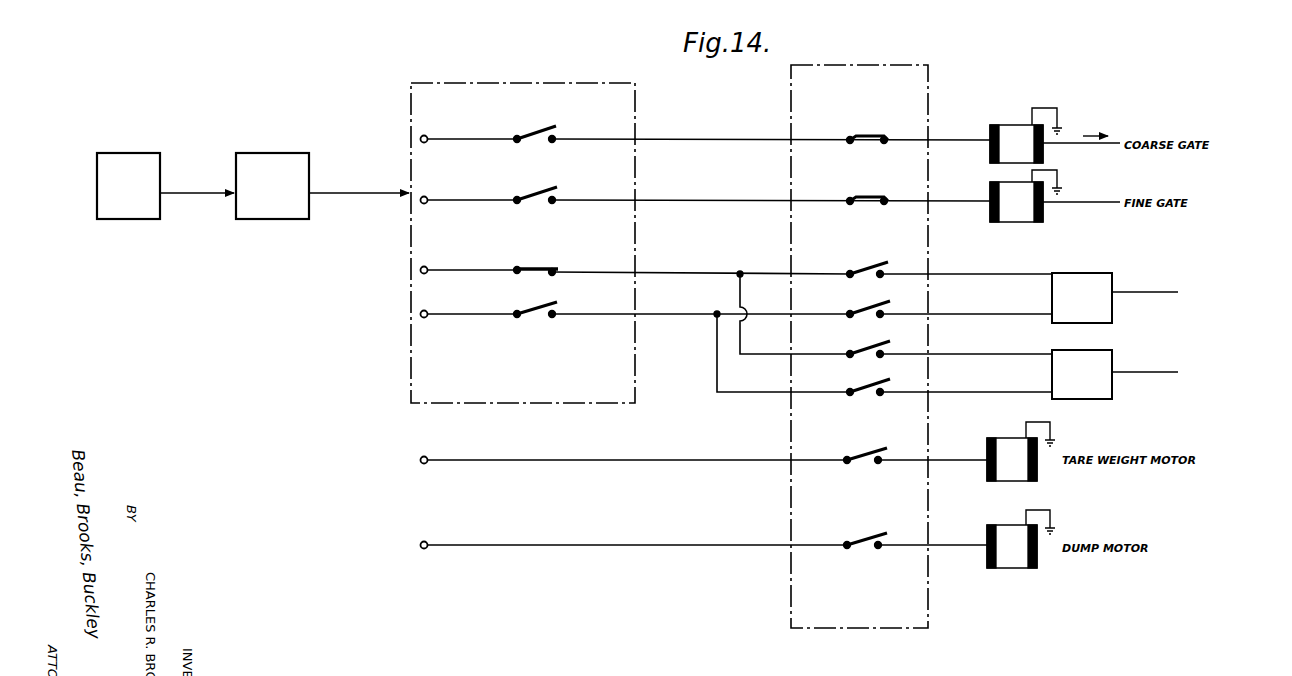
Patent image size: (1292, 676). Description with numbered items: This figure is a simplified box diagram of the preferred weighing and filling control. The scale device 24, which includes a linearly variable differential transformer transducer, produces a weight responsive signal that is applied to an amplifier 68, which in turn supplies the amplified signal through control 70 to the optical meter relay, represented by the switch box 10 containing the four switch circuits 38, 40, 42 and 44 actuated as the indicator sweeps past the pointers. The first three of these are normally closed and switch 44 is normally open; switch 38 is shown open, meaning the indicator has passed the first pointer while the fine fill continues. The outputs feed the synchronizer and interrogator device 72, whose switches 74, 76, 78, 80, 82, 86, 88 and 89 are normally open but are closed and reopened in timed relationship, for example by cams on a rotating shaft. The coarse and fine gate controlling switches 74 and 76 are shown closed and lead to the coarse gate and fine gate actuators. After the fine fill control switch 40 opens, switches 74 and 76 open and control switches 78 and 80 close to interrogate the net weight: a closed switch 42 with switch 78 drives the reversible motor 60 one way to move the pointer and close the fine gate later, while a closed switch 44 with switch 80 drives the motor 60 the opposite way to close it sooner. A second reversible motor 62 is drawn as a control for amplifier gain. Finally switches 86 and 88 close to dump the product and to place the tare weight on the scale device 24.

The switch box 10 is at (548, 82).
The scale device 24 is at (150, 153).
The switch circuit 38 is at (552, 130).
The switch circuit 40 is at (526, 192).
The switch circuit 42 is at (528, 263).
The switch circuit 44 is at (528, 308).
The reversible motor 60 is at (1106, 275).
The reversible motor 62 is at (1105, 354).
The amplifier 68 is at (284, 153).
The control 70 is at (350, 192).
The synchronizer and interrogator device 72 is at (876, 66).
The switch 74 is at (876, 134).
The switch 76 is at (884, 190).
The control switch 78 is at (878, 262).
The control switch 80 is at (884, 302).
The switch 82 is at (878, 343).
The switch 86 is at (887, 455).
The switch 88 is at (887, 539).
The switch 89 is at (892, 388).